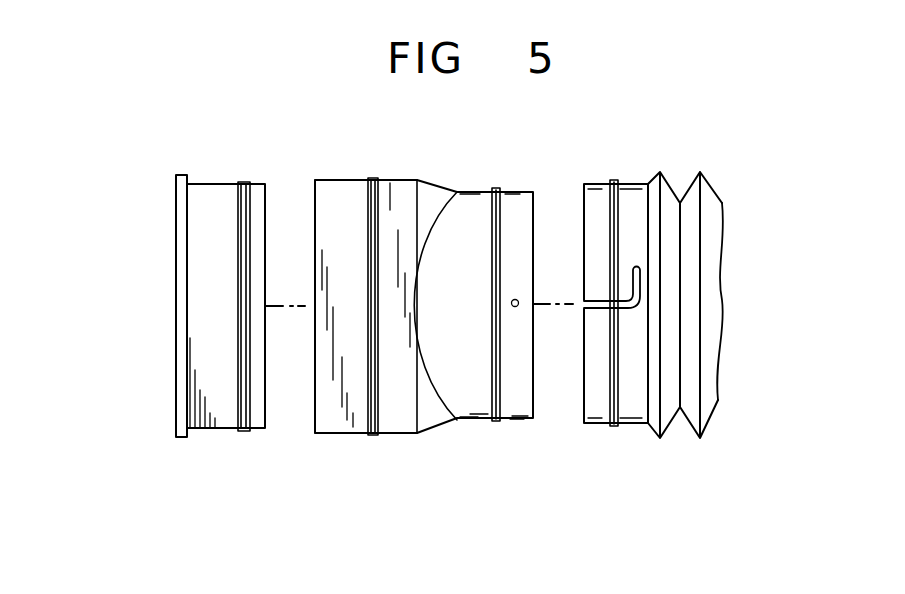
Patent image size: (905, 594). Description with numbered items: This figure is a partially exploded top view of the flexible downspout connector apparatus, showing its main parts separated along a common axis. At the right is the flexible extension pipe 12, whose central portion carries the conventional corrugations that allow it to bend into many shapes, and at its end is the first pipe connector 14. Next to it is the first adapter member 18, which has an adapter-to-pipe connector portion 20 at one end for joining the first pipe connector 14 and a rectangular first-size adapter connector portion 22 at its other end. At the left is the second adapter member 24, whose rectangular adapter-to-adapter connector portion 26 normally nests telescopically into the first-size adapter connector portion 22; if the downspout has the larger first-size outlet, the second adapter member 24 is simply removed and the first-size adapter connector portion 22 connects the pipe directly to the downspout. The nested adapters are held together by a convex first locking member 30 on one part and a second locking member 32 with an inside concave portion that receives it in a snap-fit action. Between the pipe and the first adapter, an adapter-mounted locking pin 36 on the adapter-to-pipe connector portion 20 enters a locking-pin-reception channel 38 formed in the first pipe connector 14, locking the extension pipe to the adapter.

The flexible extension pipe 12 is at (711, 188).
The first pipe connector 14 is at (604, 188).
The first adapter member 18 is at (435, 306).
The adapter-to-pipe connector portion 20 is at (518, 405).
The first-size adapter connector portion 22 is at (340, 430).
The second adapter member 24 is at (160, 287).
The adapter-to-adapter connector portion 26 is at (220, 426).
The convex first locking member 30 is at (243, 183).
The second locking member 32 is at (373, 435).
The adapter-mounted locking pin 36 is at (517, 296).
The locking-pin-reception channel 38 is at (584, 304).